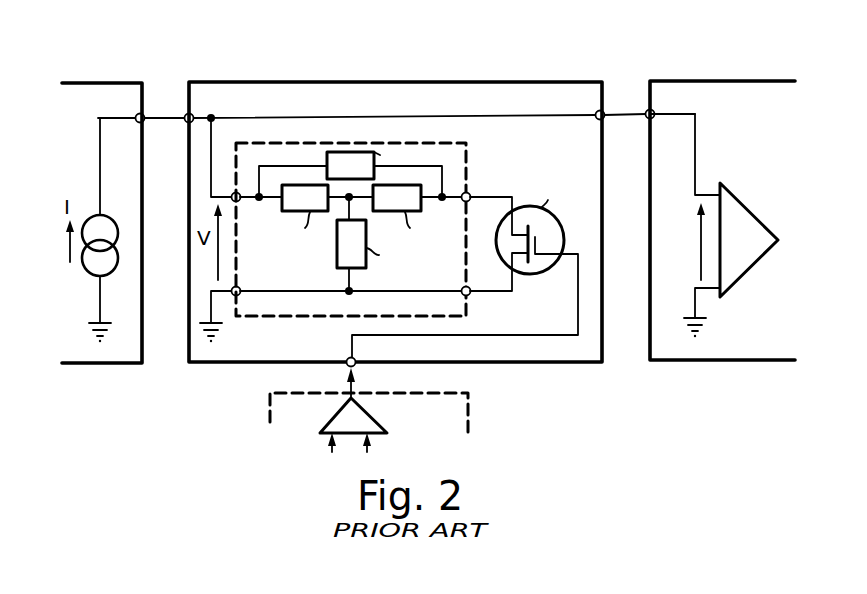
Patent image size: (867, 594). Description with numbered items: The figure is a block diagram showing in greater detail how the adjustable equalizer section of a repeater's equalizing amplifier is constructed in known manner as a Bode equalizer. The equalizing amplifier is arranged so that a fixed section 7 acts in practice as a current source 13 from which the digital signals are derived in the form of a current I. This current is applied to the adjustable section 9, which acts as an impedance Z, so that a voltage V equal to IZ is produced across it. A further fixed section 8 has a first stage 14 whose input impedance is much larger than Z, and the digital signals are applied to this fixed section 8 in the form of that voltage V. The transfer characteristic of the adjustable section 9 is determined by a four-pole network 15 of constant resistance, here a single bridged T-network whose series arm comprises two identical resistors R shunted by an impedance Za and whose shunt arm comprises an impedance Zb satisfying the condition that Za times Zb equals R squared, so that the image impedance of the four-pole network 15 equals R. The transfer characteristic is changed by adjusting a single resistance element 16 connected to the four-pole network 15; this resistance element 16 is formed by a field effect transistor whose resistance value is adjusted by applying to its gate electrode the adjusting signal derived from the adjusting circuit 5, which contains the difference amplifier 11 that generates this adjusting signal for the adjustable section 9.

The adjusting circuit 5 is at (370, 409).
The fixed section 7 is at (85, 83).
The fixed section 8 is at (735, 81).
The adjustable section 9 is at (453, 82).
The difference amplifier 11 is at (375, 421).
The current source 13 is at (116, 231).
The first stage 14 is at (751, 207).
The four-pole network 15 is at (467, 160).
The resistance element 16 is at (533, 275).